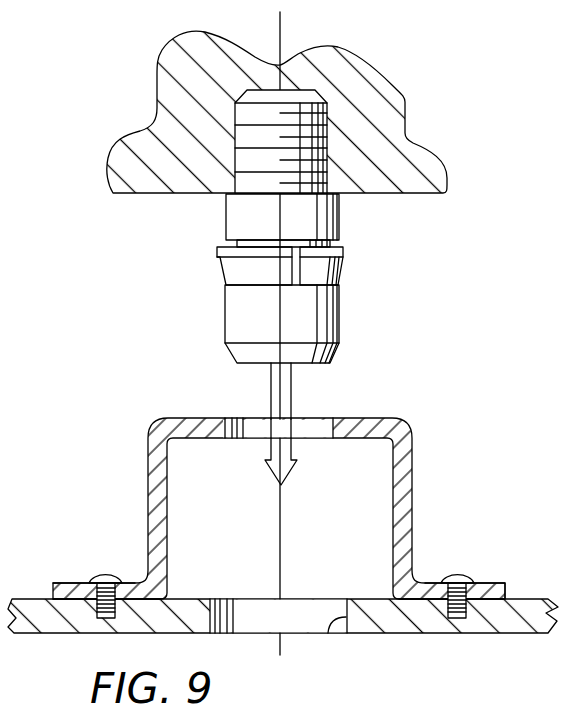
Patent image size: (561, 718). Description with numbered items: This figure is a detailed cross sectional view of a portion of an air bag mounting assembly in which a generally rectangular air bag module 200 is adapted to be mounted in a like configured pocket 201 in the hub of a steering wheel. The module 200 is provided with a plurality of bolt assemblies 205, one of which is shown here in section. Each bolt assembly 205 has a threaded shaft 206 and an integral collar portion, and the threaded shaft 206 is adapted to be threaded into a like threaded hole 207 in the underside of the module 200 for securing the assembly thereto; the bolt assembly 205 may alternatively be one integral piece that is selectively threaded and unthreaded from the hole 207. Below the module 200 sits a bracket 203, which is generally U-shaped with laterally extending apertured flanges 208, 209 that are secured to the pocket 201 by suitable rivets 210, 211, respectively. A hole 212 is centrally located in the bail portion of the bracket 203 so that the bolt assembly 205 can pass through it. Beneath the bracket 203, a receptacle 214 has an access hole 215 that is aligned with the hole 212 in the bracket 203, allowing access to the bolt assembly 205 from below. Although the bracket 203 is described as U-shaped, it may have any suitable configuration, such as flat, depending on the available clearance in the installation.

The air bag module 200 is at (392, 173).
The pocket 201 is at (185, 598).
The bracket 203 is at (150, 460).
The bolt assembly 205 is at (340, 318).
The threaded shaft 206 is at (234, 160).
The threaded hole 207 is at (282, 33).
The apertured flange 208 is at (128, 580).
The apertured flange 209 is at (430, 580).
The rivet 210 is at (106, 574).
The rivet 211 is at (460, 572).
The hole 212 is at (318, 427).
The receptacle 214 is at (417, 615).
The access hole 215 is at (328, 633).